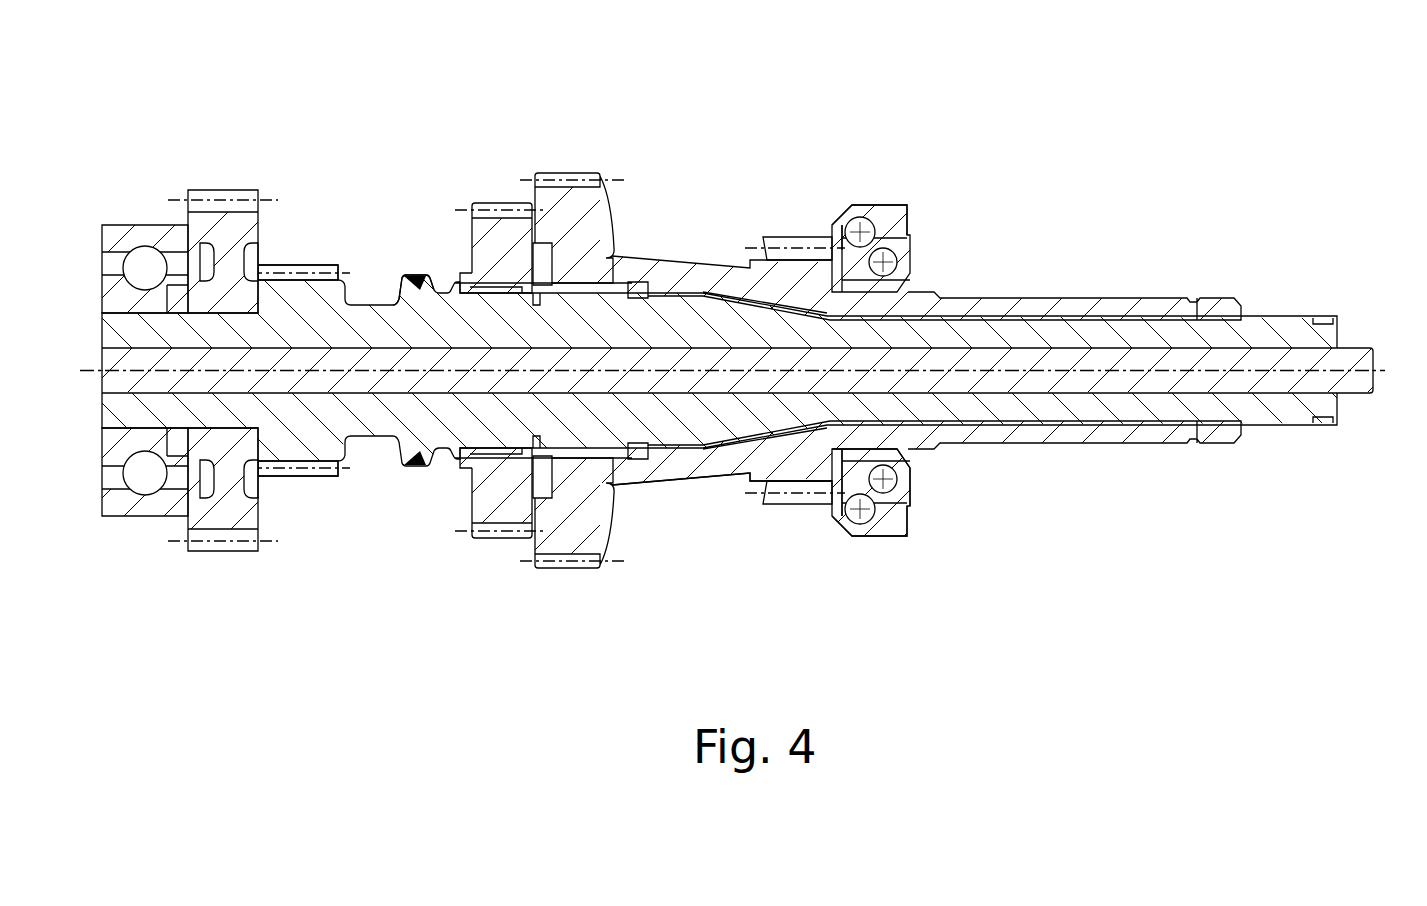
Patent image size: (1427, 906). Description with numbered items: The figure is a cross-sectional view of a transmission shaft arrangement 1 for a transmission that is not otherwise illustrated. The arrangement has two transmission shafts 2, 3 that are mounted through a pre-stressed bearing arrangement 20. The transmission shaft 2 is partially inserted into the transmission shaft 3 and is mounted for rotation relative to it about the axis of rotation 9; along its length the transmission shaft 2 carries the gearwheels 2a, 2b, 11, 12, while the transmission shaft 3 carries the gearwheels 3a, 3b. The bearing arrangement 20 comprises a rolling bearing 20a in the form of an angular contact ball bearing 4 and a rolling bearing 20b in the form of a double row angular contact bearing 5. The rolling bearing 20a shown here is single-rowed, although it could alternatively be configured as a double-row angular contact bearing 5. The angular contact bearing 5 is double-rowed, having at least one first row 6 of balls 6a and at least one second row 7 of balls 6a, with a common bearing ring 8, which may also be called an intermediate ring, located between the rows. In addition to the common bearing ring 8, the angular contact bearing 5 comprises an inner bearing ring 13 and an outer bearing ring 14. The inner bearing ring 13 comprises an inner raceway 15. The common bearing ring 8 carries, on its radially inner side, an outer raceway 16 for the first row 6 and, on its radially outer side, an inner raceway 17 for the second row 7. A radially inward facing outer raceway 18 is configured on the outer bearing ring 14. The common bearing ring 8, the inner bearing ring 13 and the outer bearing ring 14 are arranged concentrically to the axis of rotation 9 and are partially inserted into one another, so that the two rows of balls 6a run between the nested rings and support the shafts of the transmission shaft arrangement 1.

The transmission shaft arrangement 1 is at (868, 106).
The transmission shaft 2 is at (370, 330).
The gearwheel 2a is at (412, 273).
The gearwheel 2b is at (275, 265).
The transmission shaft 3 is at (1090, 297).
The gearwheel 3a is at (570, 558).
The gearwheel 3b is at (807, 495).
The angular contact ball bearing 4 is at (138, 240).
The double row angular contact bearing 5 is at (920, 210).
The first row 6 is at (900, 265).
The balls 6a is at (893, 230).
The second row 7 is at (937, 211).
The common bearing ring 8 is at (905, 500).
The axis of rotation 9 is at (1353, 370).
The gearwheel 11 is at (230, 190).
The gearwheel 12 is at (496, 205).
The inner bearing ring 13 is at (897, 460).
The outer bearing ring 14 is at (880, 530).
The inner raceway 15 is at (763, 500).
The outer raceway 16 is at (893, 481).
The inner raceway 17 is at (832, 240).
The outer raceway 18 is at (857, 218).
The bearing arrangement 20 is at (544, 542).
The rolling bearing 20a is at (126, 224).
The rolling bearing 20b is at (920, 205).